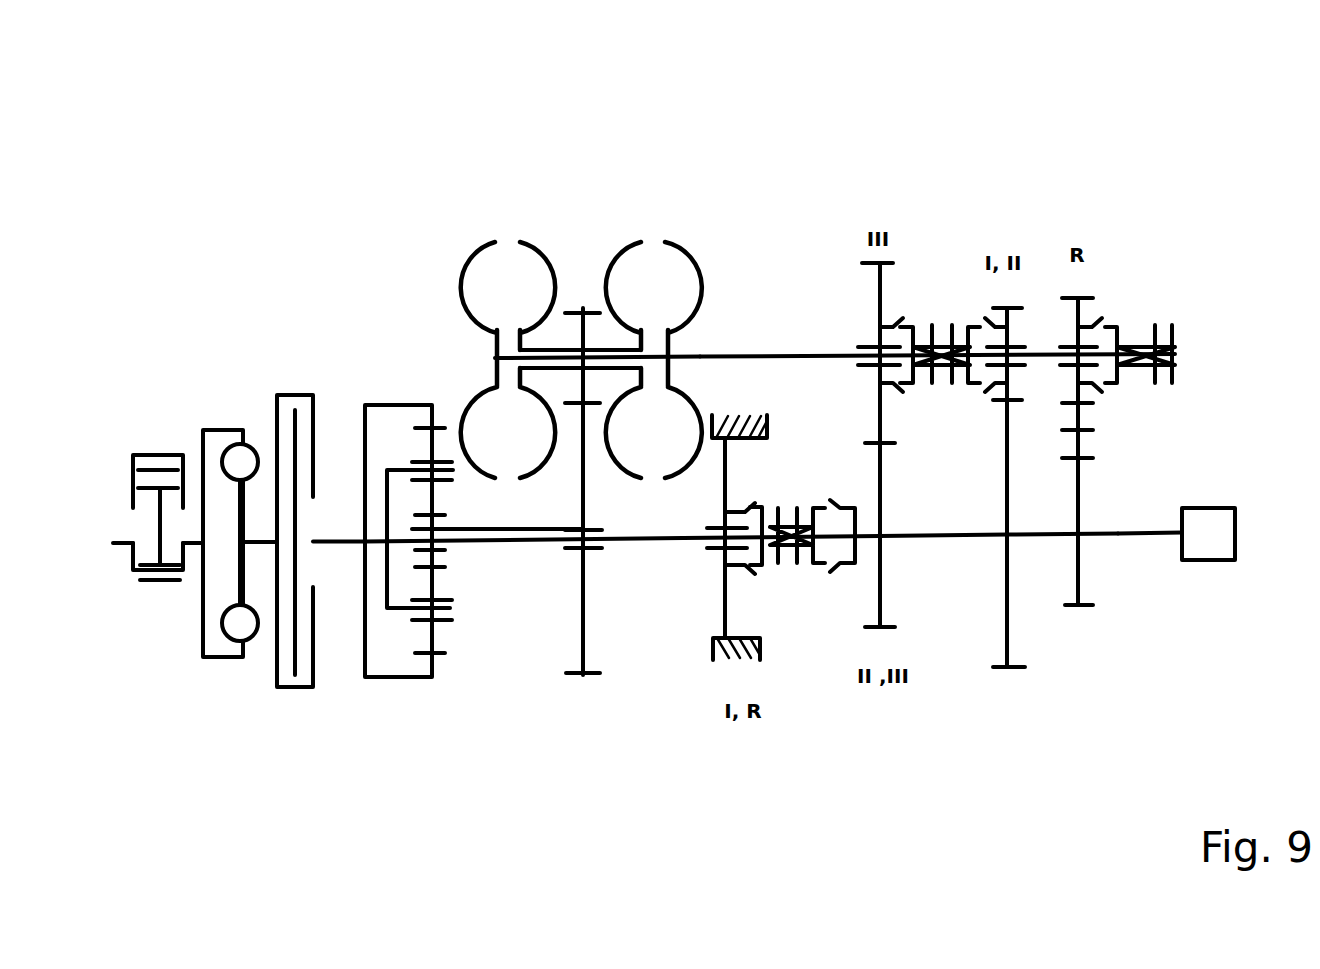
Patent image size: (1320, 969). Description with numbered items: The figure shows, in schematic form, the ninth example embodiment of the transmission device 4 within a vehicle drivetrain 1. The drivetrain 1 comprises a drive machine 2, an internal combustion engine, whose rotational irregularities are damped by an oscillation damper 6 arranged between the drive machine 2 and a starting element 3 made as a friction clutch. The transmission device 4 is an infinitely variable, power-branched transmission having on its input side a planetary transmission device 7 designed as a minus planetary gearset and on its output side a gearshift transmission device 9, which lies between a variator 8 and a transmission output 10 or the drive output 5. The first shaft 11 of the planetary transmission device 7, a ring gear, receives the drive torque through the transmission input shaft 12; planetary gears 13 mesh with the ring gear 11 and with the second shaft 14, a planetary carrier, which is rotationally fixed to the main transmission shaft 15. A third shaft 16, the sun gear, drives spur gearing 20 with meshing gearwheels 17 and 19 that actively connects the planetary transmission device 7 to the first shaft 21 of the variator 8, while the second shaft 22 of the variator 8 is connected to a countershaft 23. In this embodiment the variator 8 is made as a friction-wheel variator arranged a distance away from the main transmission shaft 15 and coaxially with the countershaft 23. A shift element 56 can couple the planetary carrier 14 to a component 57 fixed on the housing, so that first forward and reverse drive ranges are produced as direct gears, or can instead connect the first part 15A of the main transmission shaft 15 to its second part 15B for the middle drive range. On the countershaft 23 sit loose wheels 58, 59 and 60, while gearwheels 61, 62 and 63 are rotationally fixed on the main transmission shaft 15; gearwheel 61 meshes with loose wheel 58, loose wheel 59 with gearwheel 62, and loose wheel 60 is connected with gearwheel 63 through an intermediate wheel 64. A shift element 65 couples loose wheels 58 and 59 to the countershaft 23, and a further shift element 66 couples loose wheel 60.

The vehicle drivetrain 1 is at (302, 258).
The drive machine 2 is at (135, 443).
The starting element 3 is at (272, 388).
The transmission device 4 is at (722, 193).
The drive output 5 is at (1207, 533).
The oscillation damper 6 is at (210, 420).
The planetary transmission device 7 is at (415, 393).
The variator 8 is at (633, 227).
The gearshift transmission device 9 is at (1078, 282).
The transmission output 10 is at (1143, 532).
The first shaft 11 is at (390, 405).
The transmission input shaft 12 is at (348, 546).
The planetary gears 13 is at (433, 645).
The second shaft 14 is at (400, 612).
The main transmission shaft 15 is at (938, 540).
The first part of the main transmission shaft 15A is at (683, 538).
The second part of the main transmission shaft 15B is at (1118, 537).
The third shaft 16 is at (445, 535).
The gearwheel 17 is at (577, 677).
The gearwheel 19 is at (579, 307).
The spur gearing 20 is at (592, 422).
The first shaft of the variator 21 is at (613, 346).
The second shaft of the variator 22 is at (653, 356).
The countershaft 23 is at (1043, 352).
The shift element 56 is at (795, 578).
The component fixed on the housing 57 is at (725, 660).
The loose wheel 58 is at (867, 262).
The loose wheel 59 is at (1007, 307).
The loose wheel 60 is at (1071, 296).
The gearwheel 61 is at (866, 630).
The gearwheel 62 is at (1005, 667).
The gearwheel 63 is at (1083, 607).
The intermediate wheel 64 is at (1080, 447).
The shift element 65 is at (938, 318).
The shift element 66 is at (1150, 317).